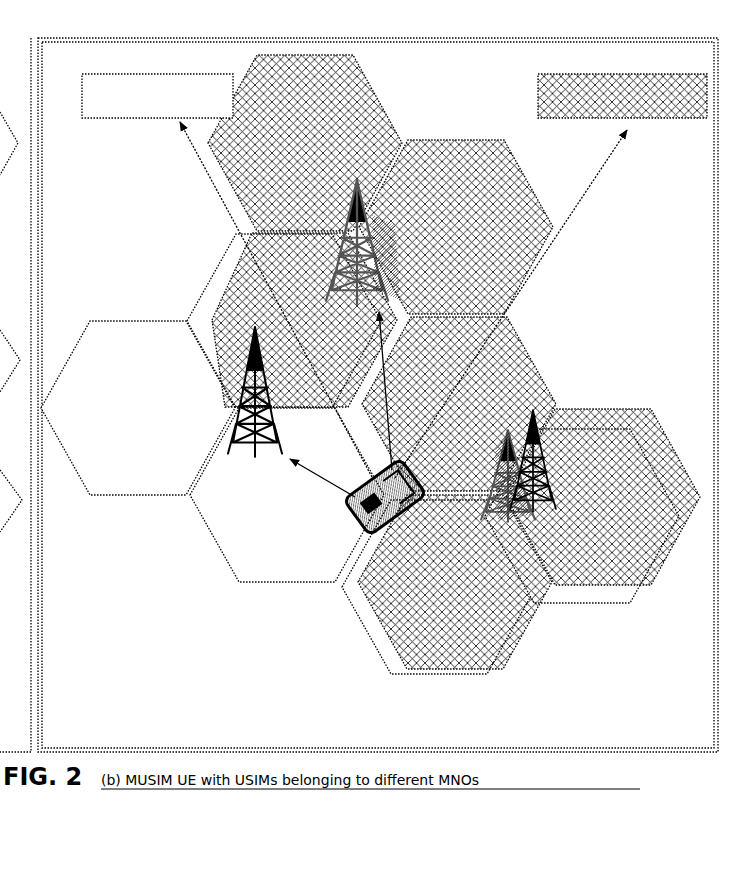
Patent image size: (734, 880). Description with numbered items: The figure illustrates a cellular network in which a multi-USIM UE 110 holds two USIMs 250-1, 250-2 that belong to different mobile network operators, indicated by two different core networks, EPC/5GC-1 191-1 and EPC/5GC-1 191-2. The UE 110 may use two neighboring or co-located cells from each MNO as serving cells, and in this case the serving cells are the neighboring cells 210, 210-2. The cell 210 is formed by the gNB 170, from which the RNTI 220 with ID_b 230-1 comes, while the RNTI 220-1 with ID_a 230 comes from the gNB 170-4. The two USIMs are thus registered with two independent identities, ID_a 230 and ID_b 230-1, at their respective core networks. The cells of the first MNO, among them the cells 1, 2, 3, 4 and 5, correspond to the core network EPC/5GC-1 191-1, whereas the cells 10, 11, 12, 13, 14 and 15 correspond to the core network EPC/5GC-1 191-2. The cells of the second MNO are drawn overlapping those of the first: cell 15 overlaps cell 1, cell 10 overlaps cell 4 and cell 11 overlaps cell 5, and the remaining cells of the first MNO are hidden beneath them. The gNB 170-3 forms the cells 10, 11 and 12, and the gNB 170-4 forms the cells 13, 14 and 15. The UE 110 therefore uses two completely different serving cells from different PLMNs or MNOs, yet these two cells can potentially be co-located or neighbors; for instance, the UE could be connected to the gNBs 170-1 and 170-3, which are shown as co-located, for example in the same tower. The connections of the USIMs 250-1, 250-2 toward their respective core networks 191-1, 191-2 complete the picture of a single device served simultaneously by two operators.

The cell 1 is at (213, 273).
The cell 2 is at (135, 482).
The cell 3 is at (280, 578).
The cell 4 is at (378, 642).
The cell 5 is at (602, 595).
The cell 10 is at (487, 650).
The cell 11 is at (657, 532).
The cell 12 is at (513, 358).
The cell 13 is at (503, 187).
The cell 14 is at (358, 122).
The cell 15 is at (312, 237).
The UE 110 is at (358, 523).
The gNB 170 is at (205, 370).
The gNB 170-1 is at (562, 432).
The gNB 170-3 is at (512, 550).
The gNB 170-4 is at (368, 232).
The core network EPC/5GC-1 191-1 is at (227, 85).
The core network EPC/5GC-1 191-2 is at (540, 85).
The cell 210 is at (230, 480).
The cell 210-2 is at (390, 315).
The RNTI 220 is at (278, 490).
The RNTI 220-1 is at (342, 337).
The ID_a 230 is at (637, 212).
The ID_b 230-1 is at (172, 178).
The USIM 250-1 is at (390, 508).
The USIM 250-2 is at (378, 474).